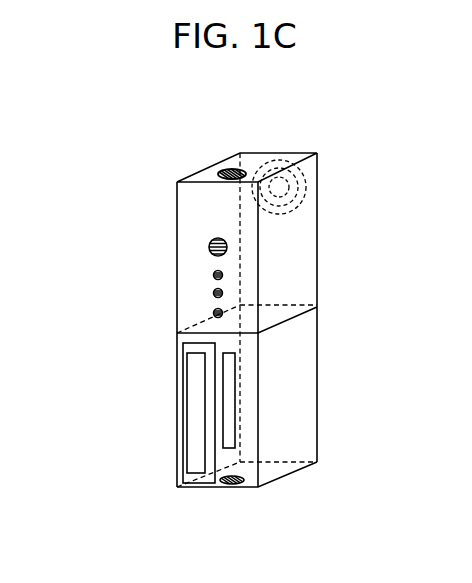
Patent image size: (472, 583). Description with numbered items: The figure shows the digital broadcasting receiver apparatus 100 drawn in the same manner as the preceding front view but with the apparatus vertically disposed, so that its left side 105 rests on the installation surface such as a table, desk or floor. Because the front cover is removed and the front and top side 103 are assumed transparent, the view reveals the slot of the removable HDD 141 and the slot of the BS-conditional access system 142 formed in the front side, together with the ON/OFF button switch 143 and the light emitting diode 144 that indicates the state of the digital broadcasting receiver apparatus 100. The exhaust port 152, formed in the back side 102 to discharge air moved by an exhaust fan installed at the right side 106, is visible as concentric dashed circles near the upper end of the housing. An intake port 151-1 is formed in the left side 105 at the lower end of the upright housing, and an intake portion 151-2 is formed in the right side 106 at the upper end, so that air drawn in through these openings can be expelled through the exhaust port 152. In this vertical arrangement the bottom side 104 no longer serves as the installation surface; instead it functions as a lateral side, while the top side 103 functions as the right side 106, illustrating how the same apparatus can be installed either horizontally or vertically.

The digital broadcasting receiver apparatus 100 is at (97, 153).
The back side 102 is at (306, 144).
The top side 103 is at (167, 393).
The bottom side 104 is at (280, 320).
The left side 105 is at (250, 497).
The right side 106 is at (250, 160).
The slot of the removable HDD 141 is at (190, 418).
The slot of a BS-conditional access system (B-CAS) 142 is at (232, 420).
The ON/OFF button switch 143 is at (209, 246).
The light emitting diode (LED) 144 is at (213, 275).
The intake port 151-1 is at (230, 487).
The intake portion 151-2 is at (230, 172).
The exhaust port 152 is at (297, 210).